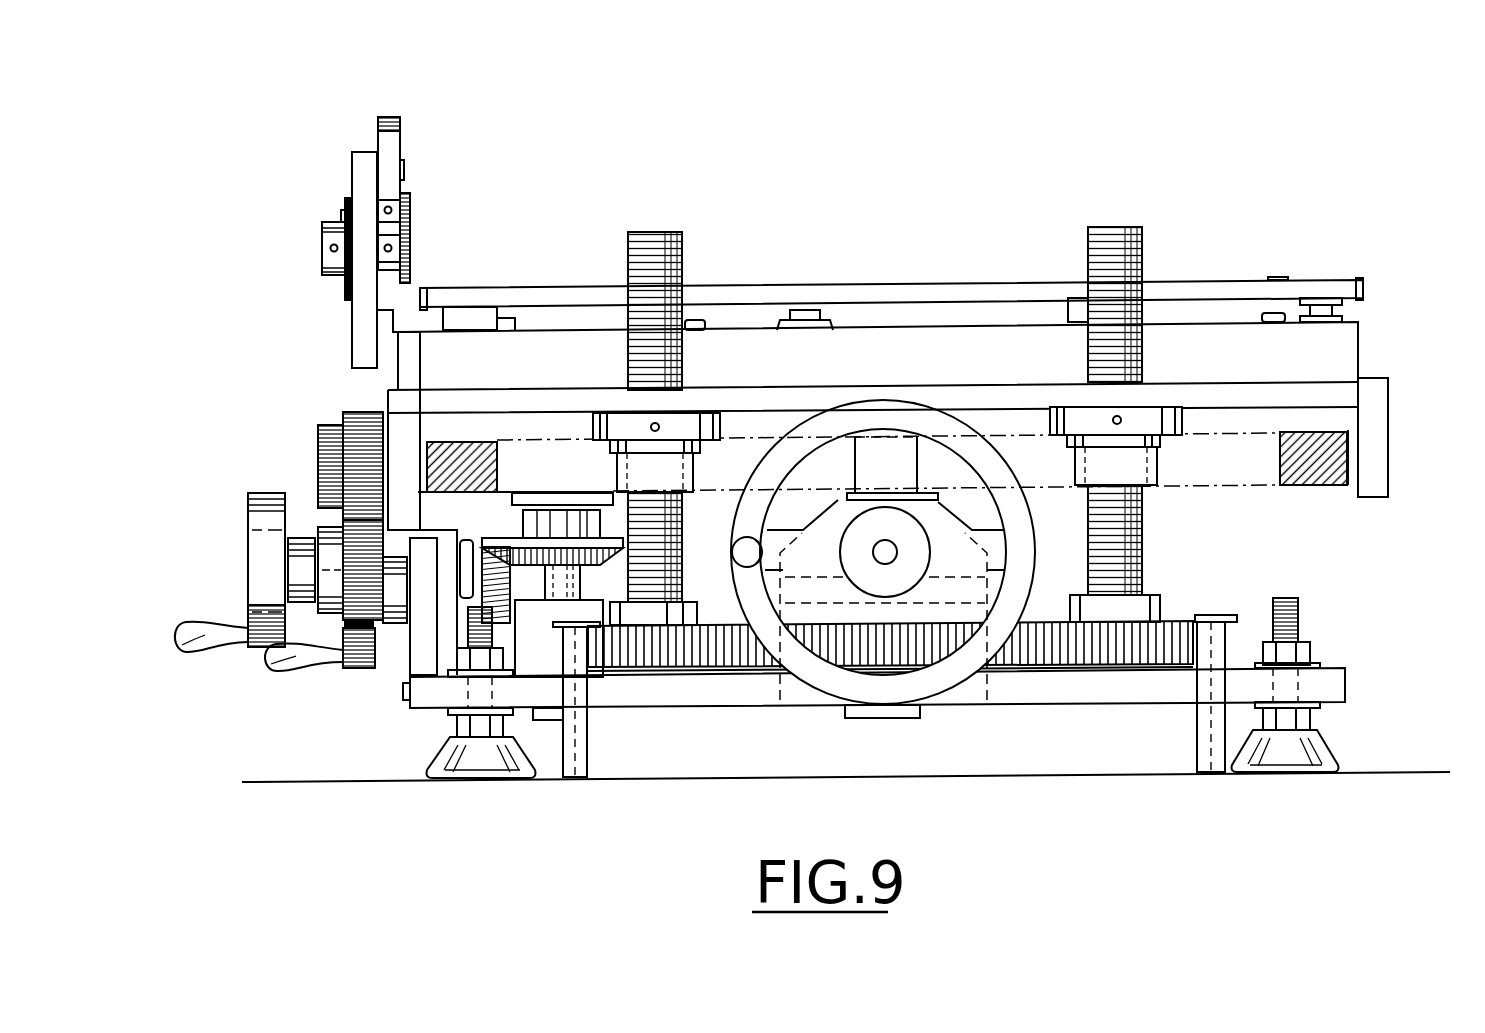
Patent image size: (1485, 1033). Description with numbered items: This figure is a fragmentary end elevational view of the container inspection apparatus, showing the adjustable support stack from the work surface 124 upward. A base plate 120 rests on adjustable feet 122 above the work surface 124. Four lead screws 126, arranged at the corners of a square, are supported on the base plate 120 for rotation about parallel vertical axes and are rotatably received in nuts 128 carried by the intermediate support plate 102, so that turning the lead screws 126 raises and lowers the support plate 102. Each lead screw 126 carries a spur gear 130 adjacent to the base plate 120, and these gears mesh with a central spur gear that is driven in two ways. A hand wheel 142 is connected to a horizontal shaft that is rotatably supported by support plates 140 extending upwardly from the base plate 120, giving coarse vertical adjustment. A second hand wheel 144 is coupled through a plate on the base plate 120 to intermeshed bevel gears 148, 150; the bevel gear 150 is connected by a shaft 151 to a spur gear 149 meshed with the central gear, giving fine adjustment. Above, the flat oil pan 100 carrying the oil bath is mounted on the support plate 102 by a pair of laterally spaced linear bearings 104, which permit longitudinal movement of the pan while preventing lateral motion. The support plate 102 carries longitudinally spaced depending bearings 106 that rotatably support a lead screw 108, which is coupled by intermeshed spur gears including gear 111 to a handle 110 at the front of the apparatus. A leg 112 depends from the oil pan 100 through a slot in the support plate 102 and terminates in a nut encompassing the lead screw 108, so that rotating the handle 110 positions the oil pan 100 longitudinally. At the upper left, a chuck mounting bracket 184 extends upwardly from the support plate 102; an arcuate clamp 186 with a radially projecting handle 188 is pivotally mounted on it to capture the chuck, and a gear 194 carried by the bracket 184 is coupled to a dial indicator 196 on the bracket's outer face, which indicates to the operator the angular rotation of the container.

The oil pan 100 is at (1178, 283).
The intermediate support plate 102 is at (1327, 390).
The linear bearings 104 is at (1303, 335).
The depending bearings 106 is at (408, 420).
The lead screw 108 is at (1312, 482).
The handle 110 is at (350, 668).
The spur gear 111 is at (350, 462).
The leg 112 is at (898, 455).
The base plate 120 is at (1332, 668).
The adjustable feet 122 is at (458, 773).
The work surface 124 is at (1398, 770).
The lead screws 126 is at (657, 233).
The nuts 128 is at (702, 412).
The spur gear 130 is at (655, 650).
The support plates 140 is at (967, 693).
The hand wheel 142 is at (895, 695).
The second hand wheel 144 is at (253, 546).
The bevel gear 148 is at (490, 588).
The spur gear 149 is at (552, 653).
The bevel gear 150 is at (558, 507).
The shaft 151 is at (560, 588).
The chuck mounting bracket 184 is at (352, 332).
The arcuate clamp 186 is at (392, 162).
The handle 188 is at (395, 117).
The gear 194 is at (410, 235).
The dial indicator 196 is at (320, 265).